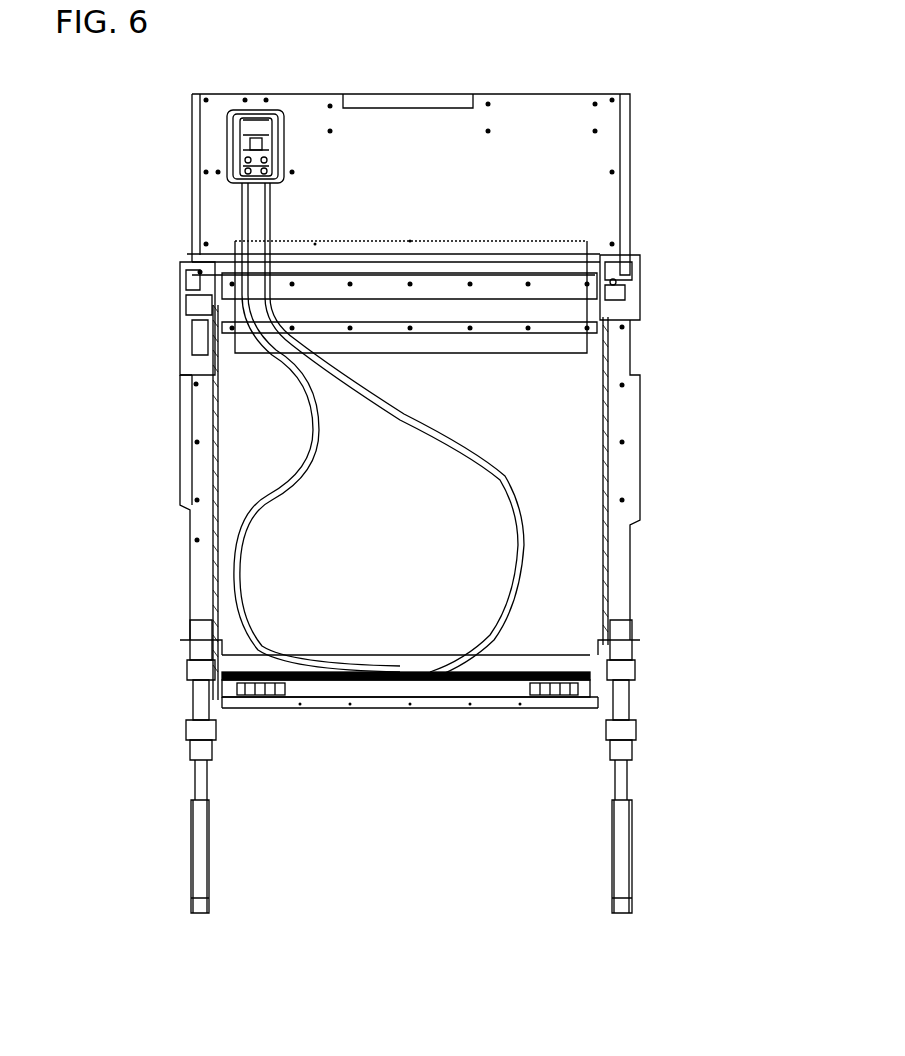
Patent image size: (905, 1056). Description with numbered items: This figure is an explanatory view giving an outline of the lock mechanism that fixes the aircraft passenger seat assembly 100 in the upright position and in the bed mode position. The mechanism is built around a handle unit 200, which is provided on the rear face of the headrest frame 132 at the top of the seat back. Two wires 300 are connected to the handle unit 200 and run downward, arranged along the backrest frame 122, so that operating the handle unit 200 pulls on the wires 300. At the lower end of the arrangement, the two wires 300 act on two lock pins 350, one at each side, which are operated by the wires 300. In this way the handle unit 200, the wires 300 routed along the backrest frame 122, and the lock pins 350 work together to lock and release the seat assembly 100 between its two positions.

The aircraft passenger seat assembly 100 is at (693, 272).
The backrest frame 122 is at (548, 425).
The headrest frame 132 is at (523, 130).
The handle unit 200 is at (265, 100).
The wires 300 is at (310, 440).
The lock pins 350 is at (232, 690).